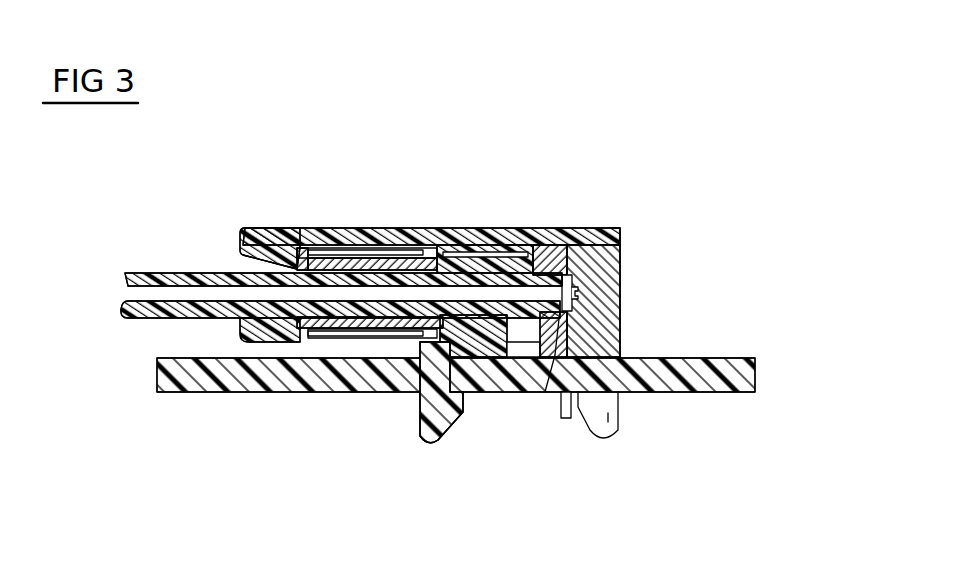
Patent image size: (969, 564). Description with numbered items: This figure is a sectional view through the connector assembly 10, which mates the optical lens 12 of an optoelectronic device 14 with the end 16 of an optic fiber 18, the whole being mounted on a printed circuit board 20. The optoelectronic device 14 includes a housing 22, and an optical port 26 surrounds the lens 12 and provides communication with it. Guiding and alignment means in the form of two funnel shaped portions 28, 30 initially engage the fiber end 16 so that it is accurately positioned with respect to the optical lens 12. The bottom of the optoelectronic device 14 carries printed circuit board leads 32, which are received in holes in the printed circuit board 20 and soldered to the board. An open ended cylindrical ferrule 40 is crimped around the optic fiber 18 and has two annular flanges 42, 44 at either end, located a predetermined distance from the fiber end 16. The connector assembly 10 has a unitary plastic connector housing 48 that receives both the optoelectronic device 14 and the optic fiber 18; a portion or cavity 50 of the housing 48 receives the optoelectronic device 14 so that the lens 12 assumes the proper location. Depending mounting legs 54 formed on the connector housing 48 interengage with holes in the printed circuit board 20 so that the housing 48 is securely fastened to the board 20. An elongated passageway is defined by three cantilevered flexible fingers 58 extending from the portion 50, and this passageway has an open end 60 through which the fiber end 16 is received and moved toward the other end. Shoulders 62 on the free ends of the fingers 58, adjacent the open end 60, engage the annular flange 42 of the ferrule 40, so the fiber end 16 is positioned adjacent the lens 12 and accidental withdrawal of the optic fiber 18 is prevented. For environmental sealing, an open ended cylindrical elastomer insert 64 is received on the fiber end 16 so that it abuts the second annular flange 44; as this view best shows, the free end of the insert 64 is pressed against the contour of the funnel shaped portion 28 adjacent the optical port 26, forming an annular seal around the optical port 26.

The connector assembly 10 is at (663, 136).
The optical lens 12 is at (618, 290).
The optoelectronic device 14 is at (623, 268).
The end of optic fiber 16 is at (545, 392).
The optic fiber 18 is at (137, 322).
The printed circuit board 20 is at (750, 382).
The housing 22 is at (618, 343).
The optical port 26 is at (618, 320).
The funnel shaped portion 28 is at (567, 244).
The funnel shaped portion 30 is at (540, 244).
The printed circuit board leads 32 is at (568, 418).
The ferrule 40 is at (380, 237).
The annular flange 42 is at (298, 248).
The annular flange 44 is at (437, 237).
The connector housing 48 is at (504, 225).
The portion or cavity 50 is at (620, 228).
The mounting legs 54 is at (619, 428).
The cantilevered flexible fingers 58 is at (342, 237).
The open end 60 is at (237, 260).
The shoulders 62 is at (240, 255).
The elastomer insert 64 is at (475, 229).